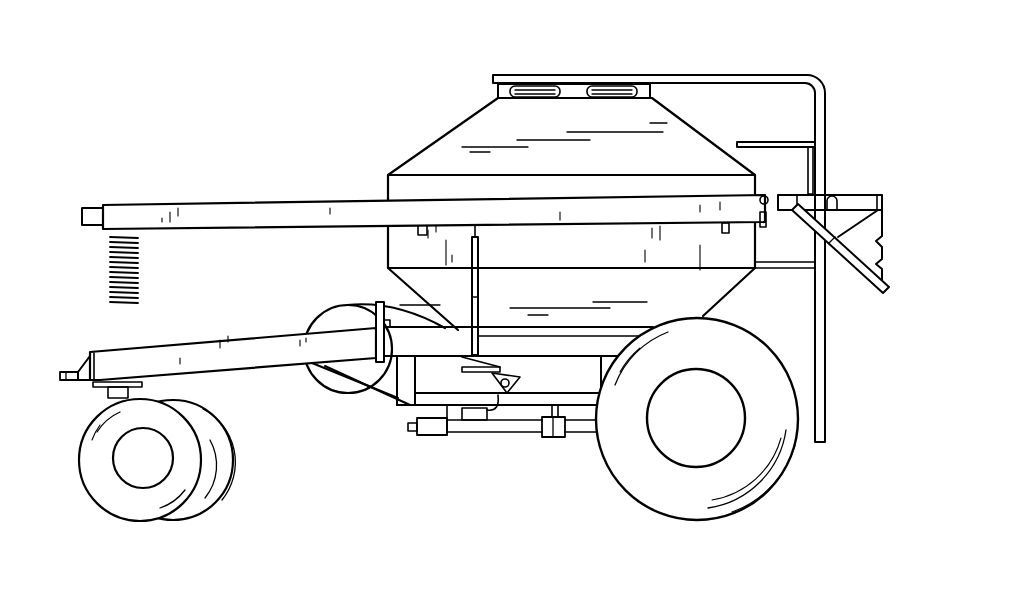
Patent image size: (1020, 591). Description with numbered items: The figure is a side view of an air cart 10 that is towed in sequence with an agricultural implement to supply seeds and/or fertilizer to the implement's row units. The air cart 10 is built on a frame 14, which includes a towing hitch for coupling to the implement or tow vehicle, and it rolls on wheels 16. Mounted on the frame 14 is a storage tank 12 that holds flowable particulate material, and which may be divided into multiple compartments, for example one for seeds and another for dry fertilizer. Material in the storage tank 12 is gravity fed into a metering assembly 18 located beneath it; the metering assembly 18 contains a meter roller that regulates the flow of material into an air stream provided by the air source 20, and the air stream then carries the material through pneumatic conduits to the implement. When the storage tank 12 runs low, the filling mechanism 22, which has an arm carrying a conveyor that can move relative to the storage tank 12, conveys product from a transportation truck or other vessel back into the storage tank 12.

The air cart 10 is at (380, 85).
The storage tank 12 is at (476, 126).
The frame 14 is at (229, 340).
The wheels 16 is at (99, 502).
The metering assembly 18 is at (526, 395).
The air source 20 is at (320, 310).
The filling mechanism 22 is at (272, 203).